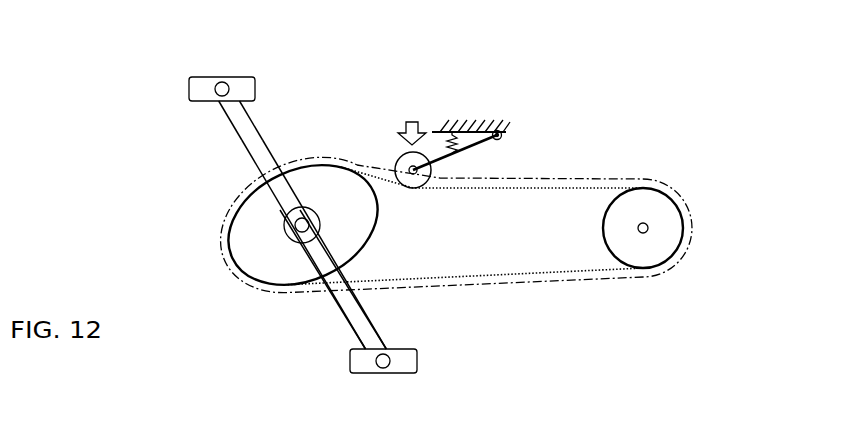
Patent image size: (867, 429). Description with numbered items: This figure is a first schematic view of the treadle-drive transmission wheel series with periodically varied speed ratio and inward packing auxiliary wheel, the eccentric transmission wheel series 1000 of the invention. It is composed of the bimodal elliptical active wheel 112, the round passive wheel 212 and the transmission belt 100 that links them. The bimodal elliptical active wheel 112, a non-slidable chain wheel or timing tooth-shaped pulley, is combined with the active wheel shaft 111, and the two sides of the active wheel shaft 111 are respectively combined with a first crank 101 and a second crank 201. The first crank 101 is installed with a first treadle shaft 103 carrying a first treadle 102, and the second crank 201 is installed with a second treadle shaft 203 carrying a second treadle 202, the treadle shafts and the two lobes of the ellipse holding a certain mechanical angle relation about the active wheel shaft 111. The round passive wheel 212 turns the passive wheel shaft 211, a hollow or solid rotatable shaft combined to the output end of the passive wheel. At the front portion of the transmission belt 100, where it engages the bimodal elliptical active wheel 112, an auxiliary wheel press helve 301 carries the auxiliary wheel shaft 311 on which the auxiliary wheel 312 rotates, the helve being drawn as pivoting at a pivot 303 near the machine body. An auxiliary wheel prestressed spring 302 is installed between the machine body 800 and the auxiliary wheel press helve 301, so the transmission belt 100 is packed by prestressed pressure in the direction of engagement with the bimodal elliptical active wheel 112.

The transmission belt 100 is at (427, 278).
The eccentric transmission wheel series 1000 is at (530, 280).
The first crank 101 is at (245, 152).
The first treadle 102 is at (225, 77).
The first treadle shaft 103 is at (214, 89).
The active wheel shaft 111 is at (302, 227).
The bimodal elliptical active wheel 112 is at (230, 225).
The second crank 201 is at (345, 317).
The second treadle 202 is at (351, 360).
The second treadle shaft 203 is at (391, 360).
The passive wheel shaft 211 is at (648, 230).
The round passive wheel 212 is at (684, 216).
The auxiliary wheel press helve 301 is at (488, 142).
The auxiliary wheel prestressed spring 302 is at (437, 139).
The pivot 303 is at (502, 137).
The auxiliary wheel shaft 311 is at (413, 170).
The auxiliary wheel 312 is at (397, 162).
The machine body 800 is at (473, 121).